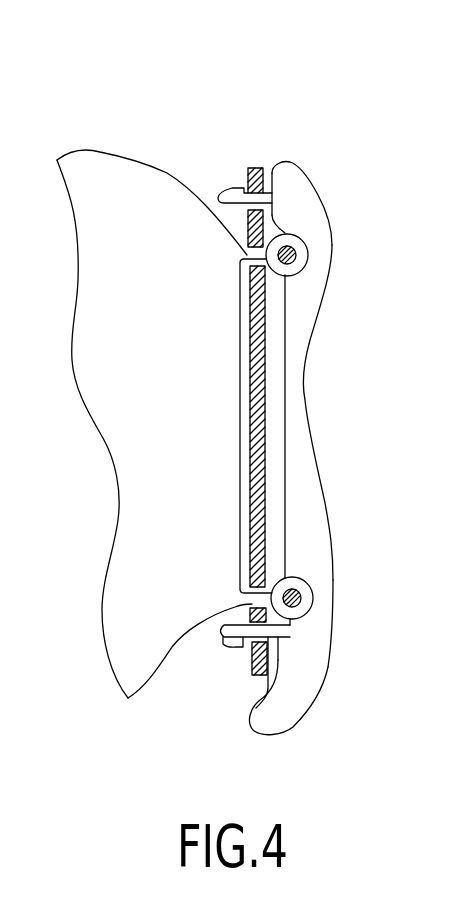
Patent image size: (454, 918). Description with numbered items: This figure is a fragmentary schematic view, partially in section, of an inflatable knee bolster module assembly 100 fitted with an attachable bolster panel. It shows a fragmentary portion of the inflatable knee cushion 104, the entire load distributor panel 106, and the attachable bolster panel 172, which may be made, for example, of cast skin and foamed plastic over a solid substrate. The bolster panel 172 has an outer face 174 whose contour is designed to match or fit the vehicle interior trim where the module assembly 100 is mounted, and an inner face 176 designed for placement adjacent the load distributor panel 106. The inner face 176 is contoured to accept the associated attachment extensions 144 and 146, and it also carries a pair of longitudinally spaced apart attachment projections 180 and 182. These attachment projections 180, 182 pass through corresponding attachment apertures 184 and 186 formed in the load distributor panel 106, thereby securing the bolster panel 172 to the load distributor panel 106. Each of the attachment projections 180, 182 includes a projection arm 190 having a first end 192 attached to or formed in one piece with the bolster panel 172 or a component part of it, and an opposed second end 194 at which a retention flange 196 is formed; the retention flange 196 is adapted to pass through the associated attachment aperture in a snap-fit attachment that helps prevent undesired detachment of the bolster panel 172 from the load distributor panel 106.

The inflatable knee bolster module assembly 100 is at (273, 113).
The inflatable knee cushion 104 is at (167, 175).
The load distributor panel 106 is at (262, 163).
The attachment extension 144 is at (294, 234).
The attachment extension 146 is at (306, 623).
The attachable bolster panel 172 is at (313, 498).
The outer face 174 is at (325, 303).
The inner face 176 is at (250, 400).
The attachment projection 180 is at (229, 227).
The attachment projection 182 is at (300, 591).
The attachment aperture 184 is at (258, 165).
The attachment aperture 186 is at (256, 677).
The projection arm 190 is at (292, 727).
The first end 192 is at (300, 638).
The second end 194 is at (223, 617).
The retention flange 196 is at (237, 645).